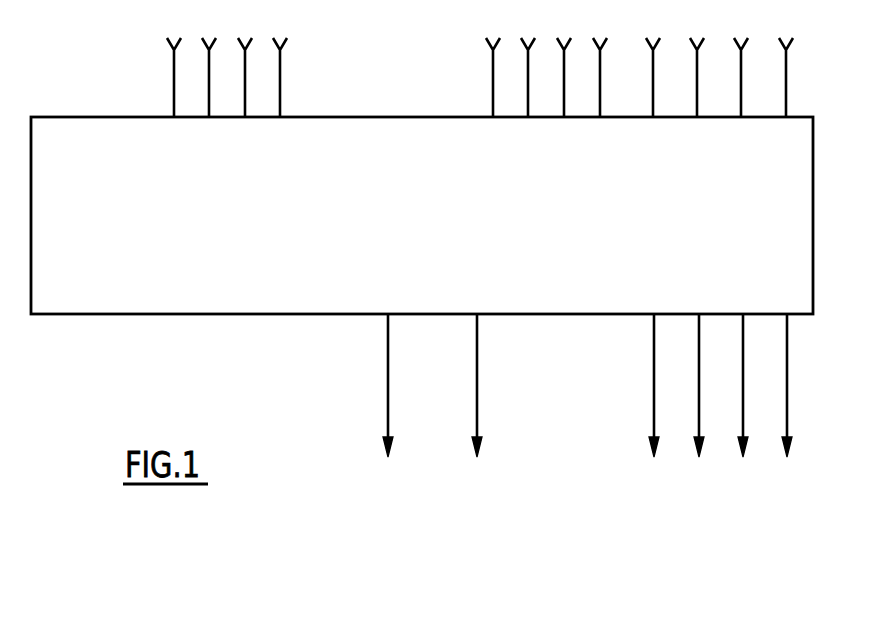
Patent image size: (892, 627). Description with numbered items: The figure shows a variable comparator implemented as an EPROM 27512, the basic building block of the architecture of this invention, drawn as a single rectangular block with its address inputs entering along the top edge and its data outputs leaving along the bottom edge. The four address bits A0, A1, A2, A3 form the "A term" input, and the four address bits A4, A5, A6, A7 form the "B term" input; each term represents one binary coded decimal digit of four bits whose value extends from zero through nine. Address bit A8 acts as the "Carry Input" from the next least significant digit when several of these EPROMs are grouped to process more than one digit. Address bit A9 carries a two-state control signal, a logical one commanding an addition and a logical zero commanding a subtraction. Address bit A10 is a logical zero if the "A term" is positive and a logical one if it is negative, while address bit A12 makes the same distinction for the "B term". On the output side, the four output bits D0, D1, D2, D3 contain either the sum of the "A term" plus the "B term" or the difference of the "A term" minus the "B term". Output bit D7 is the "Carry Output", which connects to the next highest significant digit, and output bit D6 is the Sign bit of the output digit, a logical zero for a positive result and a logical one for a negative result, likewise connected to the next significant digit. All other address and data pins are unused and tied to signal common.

The EPROM 27512 is at (422, 215).
The address bit A12 is at (174, 64).
The address bit A10 is at (209, 64).
The address bit A9 is at (245, 64).
The address bit A8 is at (280, 64).
The address bit A7 is at (493, 64).
The address bit A6 is at (528, 64).
The address bit A5 is at (564, 64).
The address bit A4 is at (600, 64).
The address bit A3 is at (653, 64).
The address bit A2 is at (697, 64).
The address bit A1 is at (741, 64).
The address bit A0 is at (786, 64).
The Carry Output D7 is at (388, 400).
The Sign bit D6 is at (477, 400).
The output bit D3 is at (654, 400).
The output bit D2 is at (699, 400).
The output bit D1 is at (743, 400).
The output bit D0 is at (787, 400).